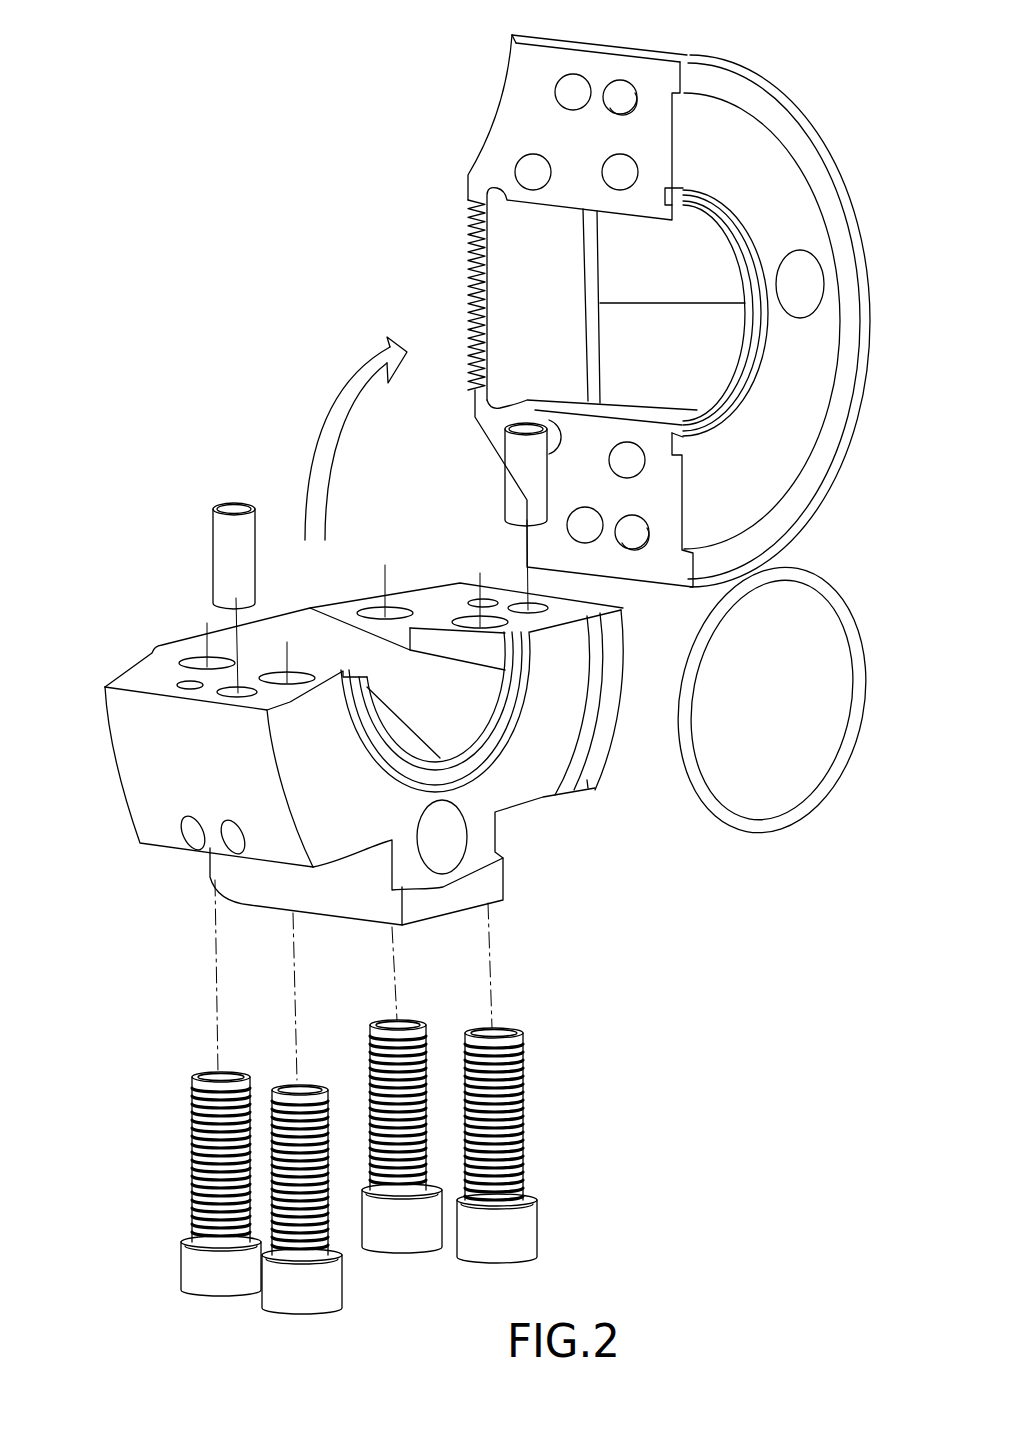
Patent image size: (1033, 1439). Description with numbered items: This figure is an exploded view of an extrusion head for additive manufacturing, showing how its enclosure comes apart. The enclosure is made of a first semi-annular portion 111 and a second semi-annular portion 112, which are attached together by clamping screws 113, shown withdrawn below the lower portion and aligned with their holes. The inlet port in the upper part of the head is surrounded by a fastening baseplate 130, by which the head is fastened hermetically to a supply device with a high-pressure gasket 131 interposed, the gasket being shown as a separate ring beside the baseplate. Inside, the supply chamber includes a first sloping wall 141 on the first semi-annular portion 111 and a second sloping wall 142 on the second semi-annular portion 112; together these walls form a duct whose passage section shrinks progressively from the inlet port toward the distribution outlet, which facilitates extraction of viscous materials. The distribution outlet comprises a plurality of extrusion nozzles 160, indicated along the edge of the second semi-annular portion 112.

The first semi-annular portion 111 is at (130, 718).
The second semi-annular portion 112 is at (631, 48).
The clamping screws 113 is at (272, 1110).
The fastening baseplate 130 is at (755, 448).
The high-pressure gasket 131 is at (847, 740).
The first sloping wall 141 is at (440, 733).
The second sloping wall 142 is at (637, 267).
The extrusion nozzles 160 is at (463, 267).